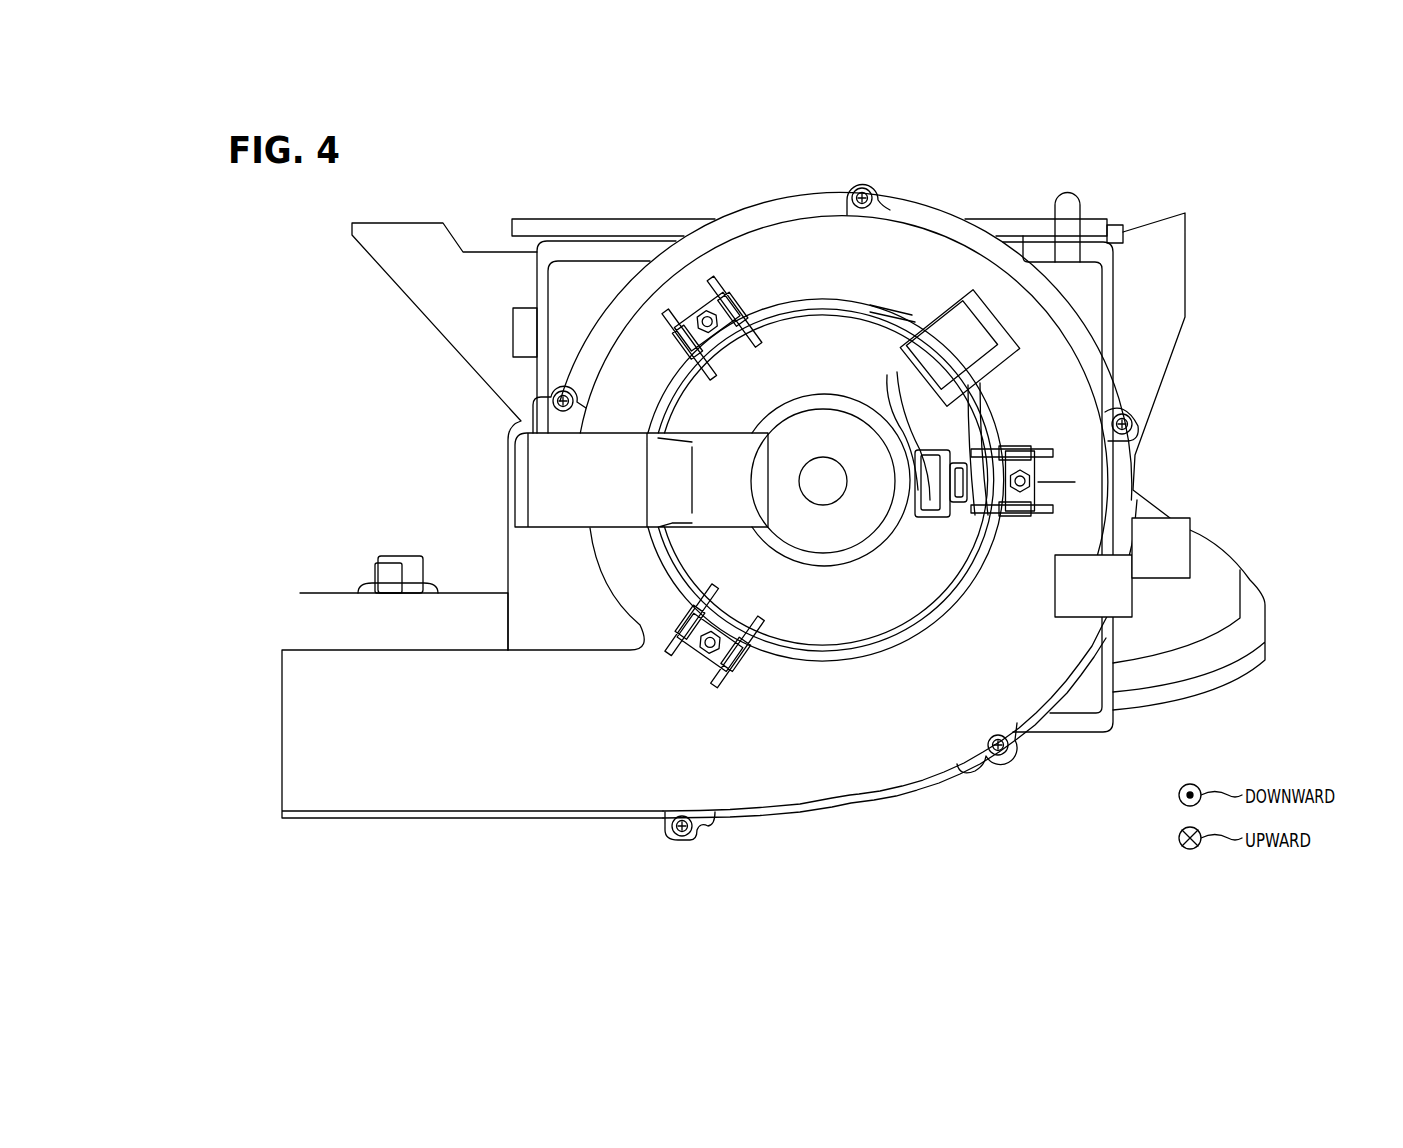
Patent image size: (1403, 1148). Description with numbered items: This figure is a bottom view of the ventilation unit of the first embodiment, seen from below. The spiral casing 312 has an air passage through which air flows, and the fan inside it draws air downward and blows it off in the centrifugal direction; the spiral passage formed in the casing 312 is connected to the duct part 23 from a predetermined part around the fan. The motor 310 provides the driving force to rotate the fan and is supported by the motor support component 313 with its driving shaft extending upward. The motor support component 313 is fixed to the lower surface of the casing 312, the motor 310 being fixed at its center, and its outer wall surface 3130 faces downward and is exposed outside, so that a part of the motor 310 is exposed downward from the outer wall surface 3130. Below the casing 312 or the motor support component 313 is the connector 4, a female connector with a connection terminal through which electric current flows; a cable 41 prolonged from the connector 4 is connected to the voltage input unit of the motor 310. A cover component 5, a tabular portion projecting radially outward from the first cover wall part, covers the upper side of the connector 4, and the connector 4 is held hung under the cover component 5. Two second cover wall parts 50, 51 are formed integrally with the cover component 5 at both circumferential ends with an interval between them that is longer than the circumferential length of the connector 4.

The duct part 23 is at (328, 778).
The motor 310 is at (820, 435).
The casing 312 is at (908, 758).
The motor support component 313 is at (892, 610).
The outer wall surface 3130 is at (810, 607).
The connector 4 is at (965, 338).
The cover component 5 is at (1007, 302).
The second cover wall part 51 is at (947, 295).
The second cover wall part 50 is at (962, 372).
The cable 41 is at (948, 440).